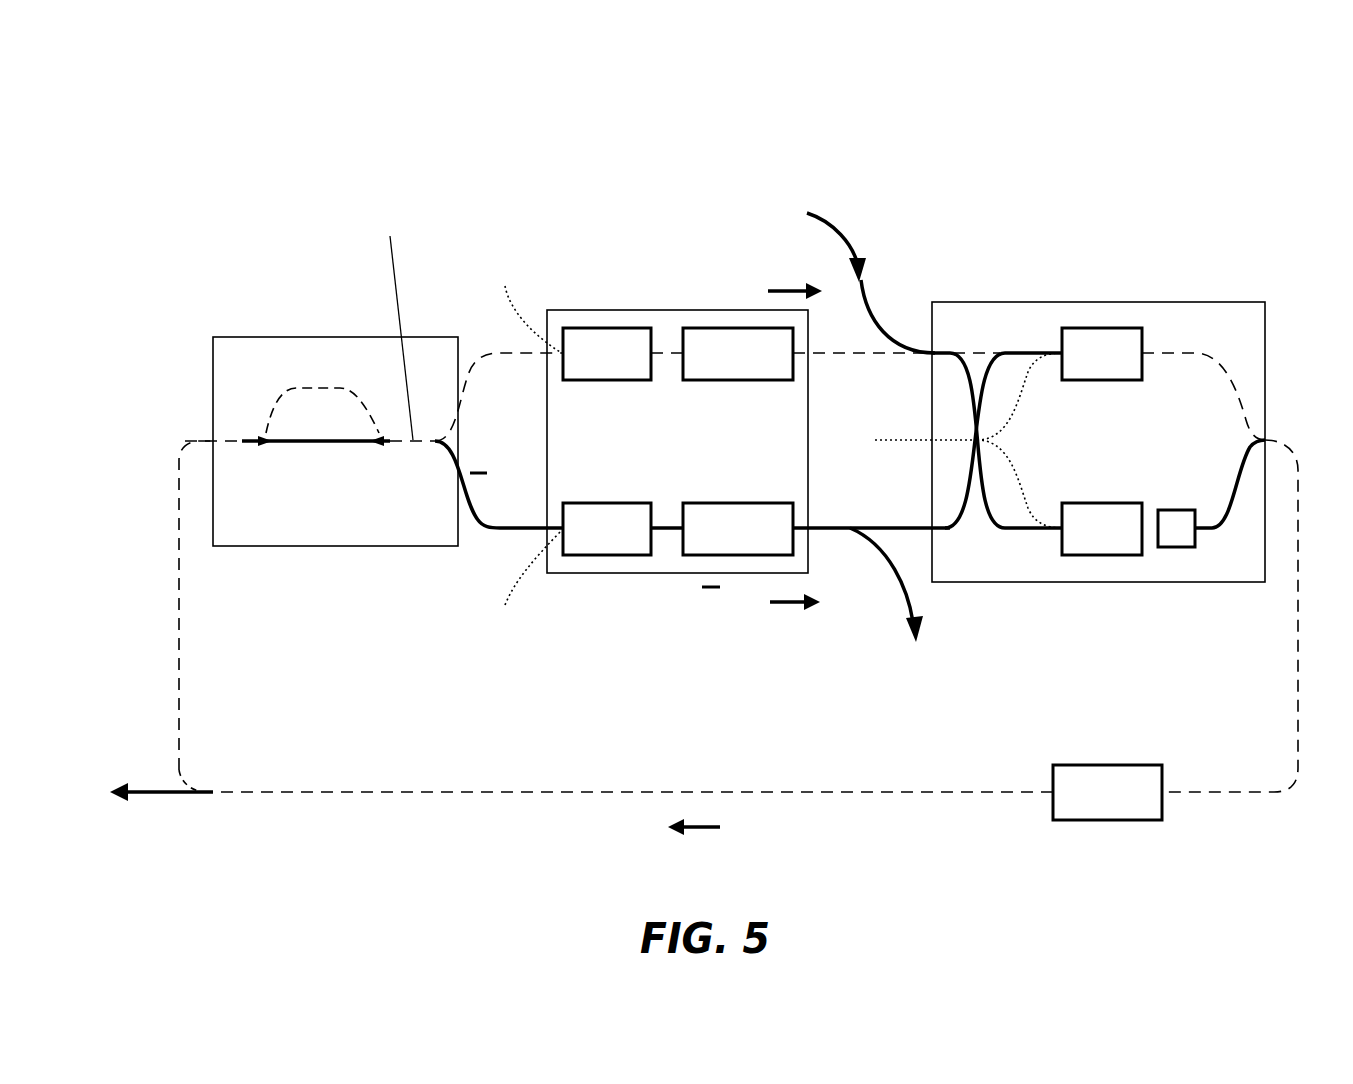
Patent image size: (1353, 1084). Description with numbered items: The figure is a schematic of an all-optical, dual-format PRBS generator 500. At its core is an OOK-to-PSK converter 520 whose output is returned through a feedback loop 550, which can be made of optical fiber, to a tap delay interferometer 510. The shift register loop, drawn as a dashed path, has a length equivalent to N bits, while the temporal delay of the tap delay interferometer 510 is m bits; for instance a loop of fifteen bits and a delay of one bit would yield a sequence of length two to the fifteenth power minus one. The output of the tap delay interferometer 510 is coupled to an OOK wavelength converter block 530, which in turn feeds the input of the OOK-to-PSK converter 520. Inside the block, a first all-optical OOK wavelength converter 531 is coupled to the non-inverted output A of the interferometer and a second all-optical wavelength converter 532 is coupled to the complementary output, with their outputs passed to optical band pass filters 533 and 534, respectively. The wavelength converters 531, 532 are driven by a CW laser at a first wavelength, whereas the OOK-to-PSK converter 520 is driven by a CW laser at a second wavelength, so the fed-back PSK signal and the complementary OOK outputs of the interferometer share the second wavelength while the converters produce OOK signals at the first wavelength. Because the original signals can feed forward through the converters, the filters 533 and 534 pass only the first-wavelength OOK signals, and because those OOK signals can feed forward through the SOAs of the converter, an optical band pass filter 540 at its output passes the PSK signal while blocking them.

The all-optical PRBS generator 500 is at (742, 77).
The tap delay interferometer 510 is at (213, 398).
The OOK-to-PSK converter 520 is at (1098, 302).
The OOK wavelength converter block 530 is at (677, 403).
The first all-optical OOK wavelength converter 531 is at (606, 380).
The second all-optical OOK wavelength converter 532 is at (607, 503).
The optical band pass filter 533 is at (738, 380).
The optical band pass filter 534 is at (738, 503).
The optical band pass filter 540 is at (1108, 820).
The feedback loop 550 is at (420, 792).